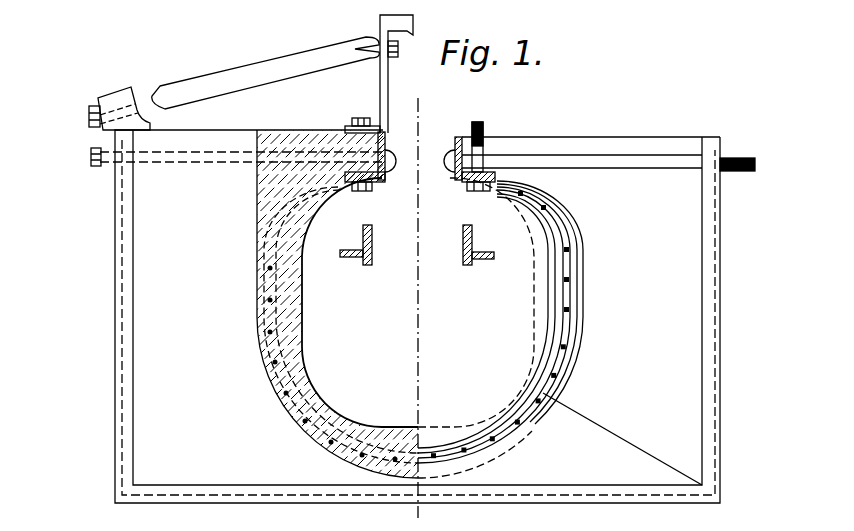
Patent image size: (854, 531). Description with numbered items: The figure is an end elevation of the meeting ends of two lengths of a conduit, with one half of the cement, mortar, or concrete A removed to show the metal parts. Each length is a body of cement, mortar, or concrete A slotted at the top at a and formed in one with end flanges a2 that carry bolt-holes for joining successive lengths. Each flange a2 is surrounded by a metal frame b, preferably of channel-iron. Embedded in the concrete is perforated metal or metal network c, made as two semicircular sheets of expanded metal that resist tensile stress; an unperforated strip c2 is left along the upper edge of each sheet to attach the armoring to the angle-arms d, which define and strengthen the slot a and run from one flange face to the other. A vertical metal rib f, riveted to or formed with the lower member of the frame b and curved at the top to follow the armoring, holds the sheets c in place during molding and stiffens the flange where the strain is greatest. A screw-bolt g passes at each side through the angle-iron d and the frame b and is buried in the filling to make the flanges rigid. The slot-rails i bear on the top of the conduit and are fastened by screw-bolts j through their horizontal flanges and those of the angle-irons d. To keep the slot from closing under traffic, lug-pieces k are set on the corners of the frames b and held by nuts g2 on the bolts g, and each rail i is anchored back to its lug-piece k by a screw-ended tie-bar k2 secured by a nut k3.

The cement, mortar, or concrete A is at (296, 323).
The slot a is at (417, 205).
The flange a2 is at (202, 324).
The metal frame b is at (117, 376).
The perforated metal or metal network c is at (281, 394).
The unperforated strip c2 is at (517, 125).
The angle-arm d is at (393, 131).
The vertical metal rib f is at (622, 439).
The screw-bolt g is at (183, 156).
The nut g2 is at (99, 158).
The slot-rail i is at (379, 25).
The screw-bolt j is at (356, 118).
The lug-piece k is at (121, 99).
The tie-bar k2 is at (250, 73).
The nut k3 is at (408, 66).